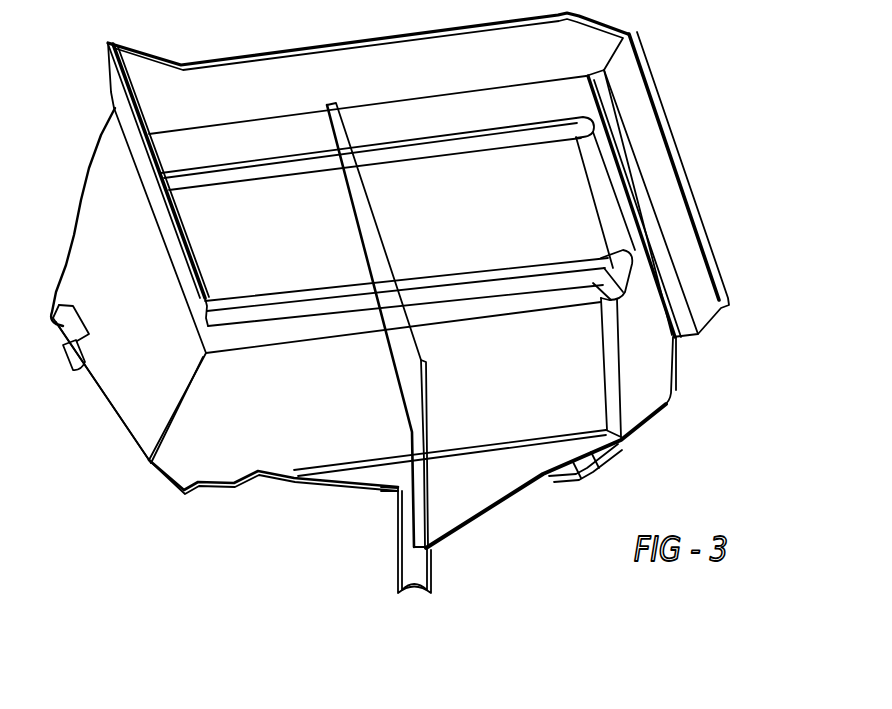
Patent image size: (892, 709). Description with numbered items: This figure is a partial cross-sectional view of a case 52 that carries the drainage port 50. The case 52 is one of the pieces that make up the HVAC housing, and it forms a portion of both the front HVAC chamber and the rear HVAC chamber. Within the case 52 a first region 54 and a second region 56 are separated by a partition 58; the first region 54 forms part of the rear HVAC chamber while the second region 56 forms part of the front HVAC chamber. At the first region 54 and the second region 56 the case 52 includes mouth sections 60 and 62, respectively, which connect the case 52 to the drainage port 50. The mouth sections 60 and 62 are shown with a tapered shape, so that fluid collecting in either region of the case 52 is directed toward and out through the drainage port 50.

The drainage port 50 is at (387, 563).
The case 52 is at (113, 170).
The first region 54 is at (248, 424).
The second region 56 is at (585, 378).
The partition 58 is at (402, 366).
The mouth section 60 is at (403, 478).
The mouth section 62 is at (492, 478).